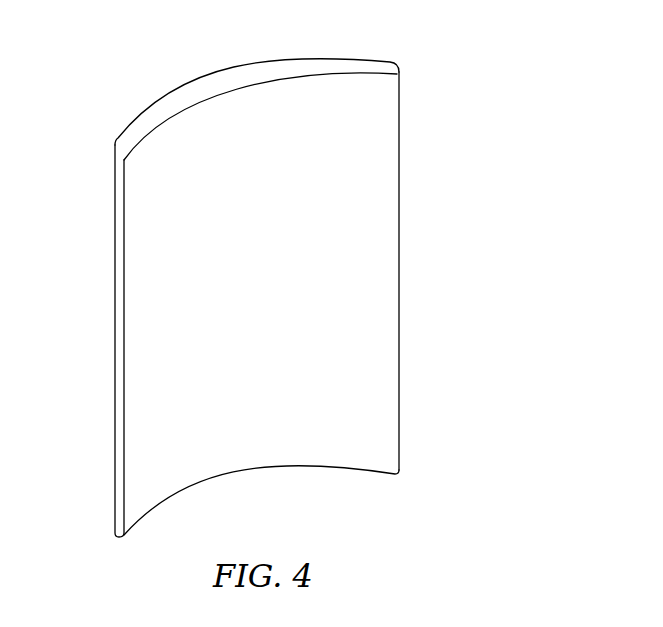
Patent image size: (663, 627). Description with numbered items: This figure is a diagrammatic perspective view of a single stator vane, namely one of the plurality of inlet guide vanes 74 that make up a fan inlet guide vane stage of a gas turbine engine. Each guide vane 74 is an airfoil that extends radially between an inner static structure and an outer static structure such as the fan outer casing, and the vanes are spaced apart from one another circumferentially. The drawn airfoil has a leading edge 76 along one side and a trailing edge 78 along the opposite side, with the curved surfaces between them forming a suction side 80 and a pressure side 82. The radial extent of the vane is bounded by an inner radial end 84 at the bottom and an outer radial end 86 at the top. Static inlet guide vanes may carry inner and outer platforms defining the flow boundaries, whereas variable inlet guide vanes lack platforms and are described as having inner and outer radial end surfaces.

The inlet guide vane 74 is at (457, 268).
The leading edge 76 is at (113, 432).
The trailing edge 78 is at (400, 404).
The suction side 80 is at (278, 60).
The pressure side 82 is at (369, 93).
The inner radial end 84 is at (277, 470).
The outer radial end 86 is at (197, 100).